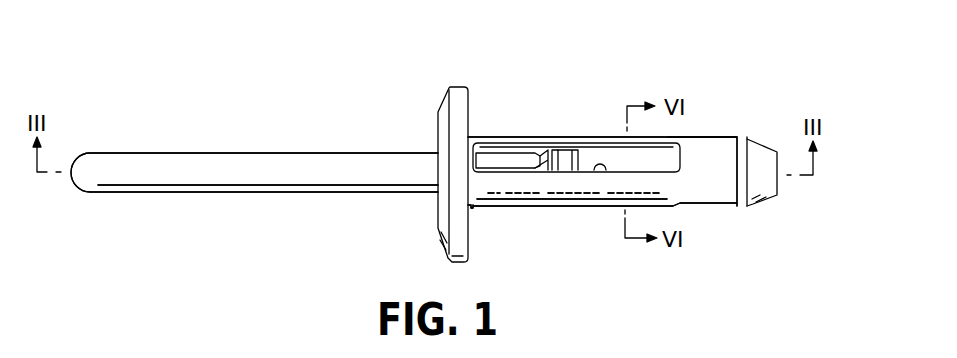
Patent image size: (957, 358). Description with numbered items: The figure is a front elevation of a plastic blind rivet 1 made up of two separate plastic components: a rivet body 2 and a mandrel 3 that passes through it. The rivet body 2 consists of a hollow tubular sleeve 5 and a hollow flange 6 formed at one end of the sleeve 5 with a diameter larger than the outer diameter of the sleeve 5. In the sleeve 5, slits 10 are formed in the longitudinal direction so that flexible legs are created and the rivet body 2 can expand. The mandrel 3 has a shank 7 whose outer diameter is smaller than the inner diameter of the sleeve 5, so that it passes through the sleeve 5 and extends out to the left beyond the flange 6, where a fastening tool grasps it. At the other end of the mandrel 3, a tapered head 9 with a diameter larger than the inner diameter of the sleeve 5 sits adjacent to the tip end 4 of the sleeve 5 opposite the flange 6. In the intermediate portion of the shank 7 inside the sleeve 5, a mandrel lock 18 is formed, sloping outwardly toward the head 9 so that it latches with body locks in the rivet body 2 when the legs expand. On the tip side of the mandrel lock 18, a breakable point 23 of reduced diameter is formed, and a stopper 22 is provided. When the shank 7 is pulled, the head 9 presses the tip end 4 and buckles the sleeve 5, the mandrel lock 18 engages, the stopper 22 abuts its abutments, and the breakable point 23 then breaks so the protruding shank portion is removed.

The blind rivet 1 is at (500, 42).
The rivet body 2 is at (513, 128).
The mandrel 3 is at (395, 128).
The tip end 4 is at (705, 162).
The sleeve 5 is at (572, 190).
The flange 6 is at (438, 212).
The shank 7 is at (255, 178).
The head 9 is at (758, 205).
The slits 10 is at (606, 168).
The mandrel lock 18 is at (544, 150).
The stopper 22 is at (570, 148).
The breakable point 23 is at (543, 173).